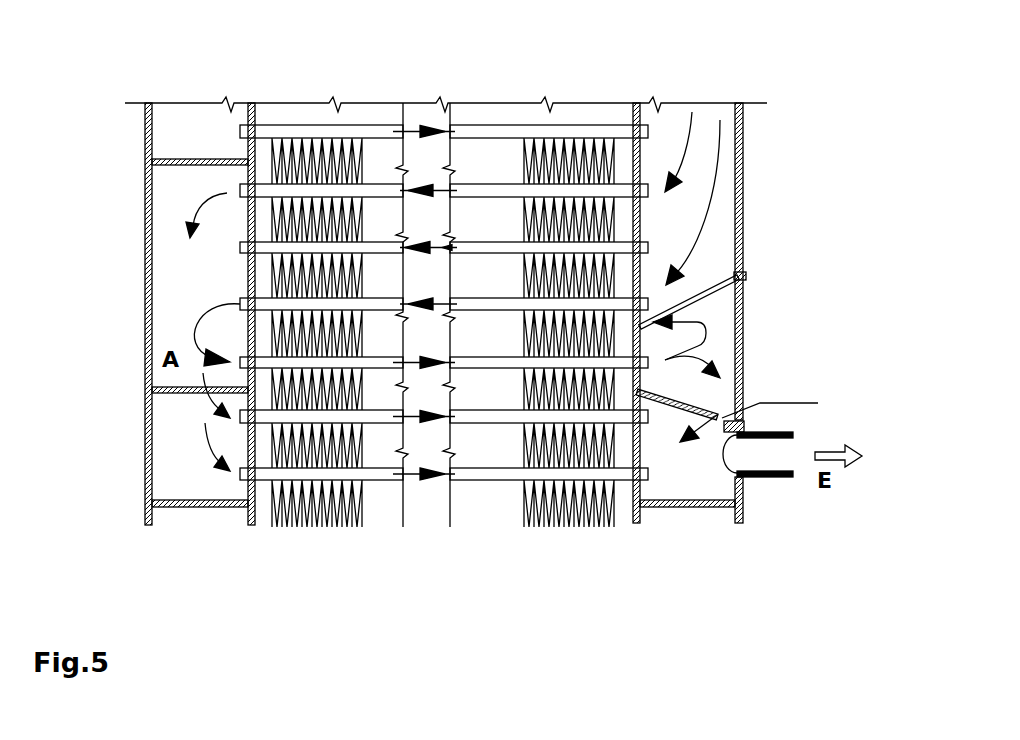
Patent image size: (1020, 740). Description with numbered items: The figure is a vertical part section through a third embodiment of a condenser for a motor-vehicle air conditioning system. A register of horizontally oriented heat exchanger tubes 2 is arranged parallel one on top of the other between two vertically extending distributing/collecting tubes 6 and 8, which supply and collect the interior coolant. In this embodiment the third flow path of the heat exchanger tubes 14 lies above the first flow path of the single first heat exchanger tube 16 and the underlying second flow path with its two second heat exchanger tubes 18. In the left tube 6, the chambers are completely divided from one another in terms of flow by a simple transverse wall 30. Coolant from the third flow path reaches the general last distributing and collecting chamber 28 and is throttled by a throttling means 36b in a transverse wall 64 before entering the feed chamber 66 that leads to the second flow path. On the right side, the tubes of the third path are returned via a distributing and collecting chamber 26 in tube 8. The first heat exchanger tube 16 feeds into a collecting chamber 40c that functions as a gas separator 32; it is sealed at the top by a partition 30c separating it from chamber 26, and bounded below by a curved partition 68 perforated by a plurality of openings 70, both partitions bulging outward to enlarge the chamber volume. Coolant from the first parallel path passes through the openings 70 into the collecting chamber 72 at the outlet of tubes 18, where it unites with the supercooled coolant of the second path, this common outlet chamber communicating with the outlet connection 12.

The heat exchanger tubes 2 is at (549, 270).
The distributing/collecting tube 6 is at (180, 80).
The distributing and collecting tube 8 is at (688, 80).
The outlet connection 12 is at (757, 462).
The heat exchanger tubes 14 is at (274, 248).
The first heat exchanger tube 16 is at (485, 360).
The second heat exchanger tubes 18 is at (522, 473).
The distributing and collecting chamber 26 is at (730, 266).
The last distributing and collecting chamber 28 is at (193, 200).
The transverse wall 30 is at (207, 160).
The partition 30c is at (710, 298).
The gas separator 32 is at (691, 392).
The throttling means 36b is at (205, 398).
The collecting chamber 40c is at (702, 350).
The transverse wall 64 is at (163, 392).
The feed chamber 66 is at (194, 443).
The partition 68 is at (660, 393).
The openings 70 is at (717, 422).
The collecting chamber 72 is at (672, 458).